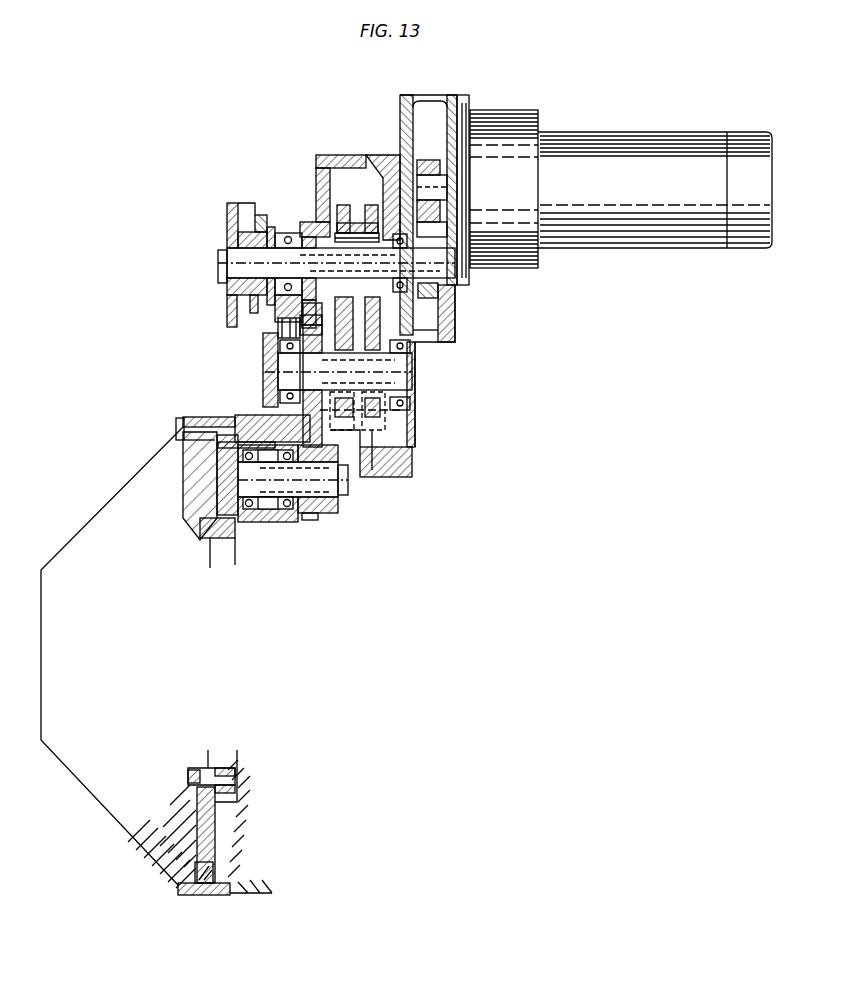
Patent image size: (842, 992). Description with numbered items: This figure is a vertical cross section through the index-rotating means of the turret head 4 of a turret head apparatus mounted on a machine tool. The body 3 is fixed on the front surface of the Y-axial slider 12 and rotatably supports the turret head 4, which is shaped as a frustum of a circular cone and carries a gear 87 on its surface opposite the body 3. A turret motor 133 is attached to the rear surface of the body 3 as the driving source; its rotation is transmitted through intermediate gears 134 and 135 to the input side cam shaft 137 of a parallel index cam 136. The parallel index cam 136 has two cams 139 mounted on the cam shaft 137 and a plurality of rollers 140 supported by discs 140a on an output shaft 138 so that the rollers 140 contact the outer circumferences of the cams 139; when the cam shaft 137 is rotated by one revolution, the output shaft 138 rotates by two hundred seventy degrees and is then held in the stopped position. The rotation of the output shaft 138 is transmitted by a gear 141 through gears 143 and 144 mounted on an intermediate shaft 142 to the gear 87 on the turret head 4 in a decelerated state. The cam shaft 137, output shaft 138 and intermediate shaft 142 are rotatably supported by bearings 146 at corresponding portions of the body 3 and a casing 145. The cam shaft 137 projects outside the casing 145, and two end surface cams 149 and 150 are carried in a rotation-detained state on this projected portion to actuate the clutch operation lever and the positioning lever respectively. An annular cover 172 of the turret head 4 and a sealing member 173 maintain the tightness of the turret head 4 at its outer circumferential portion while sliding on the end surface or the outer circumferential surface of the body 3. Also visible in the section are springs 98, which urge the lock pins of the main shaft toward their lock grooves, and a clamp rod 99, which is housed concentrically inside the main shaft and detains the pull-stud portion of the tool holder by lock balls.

The body 3 is at (405, 150).
The turret head 4 is at (150, 855).
The slider 12 is at (240, 753).
The gear 87 is at (213, 550).
The springs 98 is at (192, 895).
The clamp rod 99 is at (208, 885).
The turret motor 133 is at (615, 135).
The intermediate gear 134 is at (425, 162).
The intermediate gear 135 is at (445, 300).
The parallel index cam 136 is at (418, 352).
The cam shaft 137 is at (312, 248).
The output shaft 138 is at (410, 375).
The cams 139 is at (348, 212).
The rollers 140 is at (375, 440).
The discs 140a is at (300, 365).
The gear 141 is at (282, 328).
The intermediate shaft 142 is at (270, 510).
The gear 143 is at (315, 522).
The gear 144 is at (200, 434).
The casing 145 is at (255, 440).
The bearings 146 is at (278, 232).
The cam 149 is at (258, 213).
The cam 150 is at (232, 203).
The cover 172 is at (192, 420).
The sealing member 173 is at (185, 440).